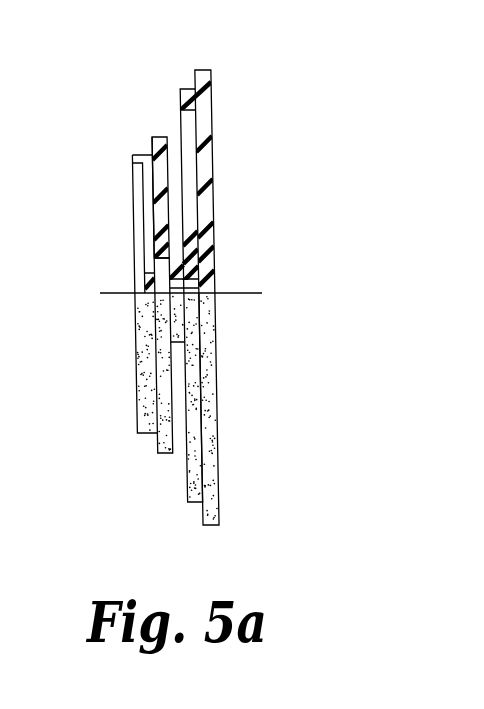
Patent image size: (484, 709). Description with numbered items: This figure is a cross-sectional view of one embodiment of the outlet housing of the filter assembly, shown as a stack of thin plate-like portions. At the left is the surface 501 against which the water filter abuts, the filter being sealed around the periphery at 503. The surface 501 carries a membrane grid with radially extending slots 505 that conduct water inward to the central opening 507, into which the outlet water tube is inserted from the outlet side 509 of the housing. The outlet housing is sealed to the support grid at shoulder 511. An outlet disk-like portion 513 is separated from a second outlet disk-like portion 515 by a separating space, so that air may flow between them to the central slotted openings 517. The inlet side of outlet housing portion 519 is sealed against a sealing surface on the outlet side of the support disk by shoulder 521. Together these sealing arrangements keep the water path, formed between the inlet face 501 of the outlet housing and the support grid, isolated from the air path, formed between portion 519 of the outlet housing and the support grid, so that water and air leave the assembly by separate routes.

The surface 501 is at (140, 398).
The periphery seal 503 is at (133, 159).
The radially extending slots 505 is at (134, 215).
The central opening 507 is at (182, 291).
The outlet side 509 is at (216, 150).
The shoulder 511 is at (151, 155).
The outlet disk-like portion 513 is at (168, 137).
The outlet disk-like portion 515 is at (187, 476).
The central slotted openings 517 is at (190, 263).
The outlet housing portion 519 is at (139, 323).
The shoulder 521 is at (181, 89).